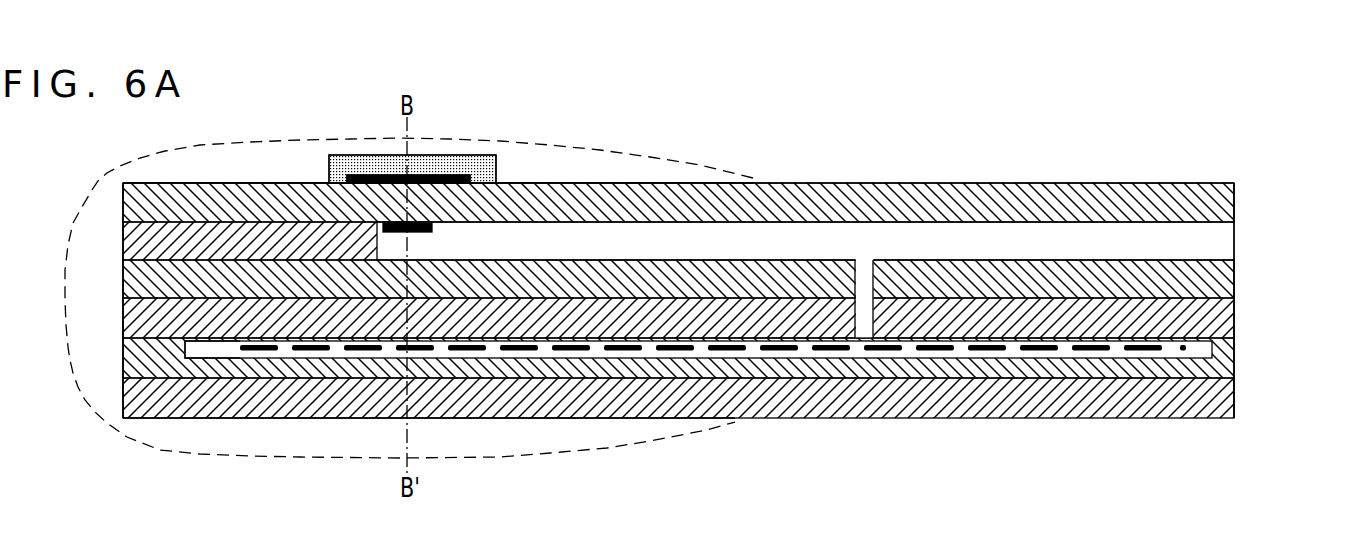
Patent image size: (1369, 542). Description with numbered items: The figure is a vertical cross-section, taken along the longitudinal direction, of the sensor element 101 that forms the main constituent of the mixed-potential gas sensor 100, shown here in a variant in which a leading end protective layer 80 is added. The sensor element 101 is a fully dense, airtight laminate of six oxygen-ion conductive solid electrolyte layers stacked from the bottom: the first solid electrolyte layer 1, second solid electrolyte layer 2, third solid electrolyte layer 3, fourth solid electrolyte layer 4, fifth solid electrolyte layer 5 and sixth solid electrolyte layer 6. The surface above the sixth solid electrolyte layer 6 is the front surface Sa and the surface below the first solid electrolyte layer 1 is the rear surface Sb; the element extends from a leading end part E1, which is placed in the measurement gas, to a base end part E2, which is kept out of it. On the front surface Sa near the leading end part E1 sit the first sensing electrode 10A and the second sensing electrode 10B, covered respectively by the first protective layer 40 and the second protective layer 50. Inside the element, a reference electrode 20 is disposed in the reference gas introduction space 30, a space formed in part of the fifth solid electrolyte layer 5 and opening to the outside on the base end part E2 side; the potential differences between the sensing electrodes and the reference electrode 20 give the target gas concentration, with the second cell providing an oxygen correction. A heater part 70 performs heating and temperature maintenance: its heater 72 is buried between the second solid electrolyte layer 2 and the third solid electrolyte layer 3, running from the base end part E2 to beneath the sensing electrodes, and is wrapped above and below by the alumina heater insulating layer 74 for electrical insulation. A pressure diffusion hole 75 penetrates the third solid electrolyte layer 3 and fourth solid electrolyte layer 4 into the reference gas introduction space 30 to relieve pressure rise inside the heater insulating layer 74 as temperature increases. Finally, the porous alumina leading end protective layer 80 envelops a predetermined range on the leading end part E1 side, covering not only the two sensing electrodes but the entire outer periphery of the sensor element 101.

The first solid electrolyte layer 1 is at (1222, 400).
The second solid electrolyte layer 2 is at (1237, 363).
The third solid electrolyte layer 3 is at (1222, 322).
The fourth solid electrolyte layer 4 is at (1237, 285).
The fifth solid electrolyte layer 5 is at (125, 242).
The sixth solid electrolyte layer 6 is at (1237, 208).
The first sensing electrode 10A is at (357, 176).
The second sensing electrode 10B is at (408, 179).
The reference electrode 20 is at (433, 228).
The reference gas introduction space 30 is at (1222, 243).
The first protective layer 40 is at (497, 170).
The second protective layer 50 is at (412, 169).
The heater part 70 is at (897, 362).
The heater 72 is at (255, 352).
The heater insulating layer 74 is at (208, 348).
The pressure diffusion hole 75 is at (871, 263).
The leading end protective layer 80 is at (700, 155).
The gas sensor 100 is at (1092, 140).
The sensor element 101 is at (188, 182).
The front surface Sa is at (148, 166).
The rear surface Sb is at (150, 432).
The leading end part E1 is at (102, 289).
The base end part E2 is at (1289, 340).